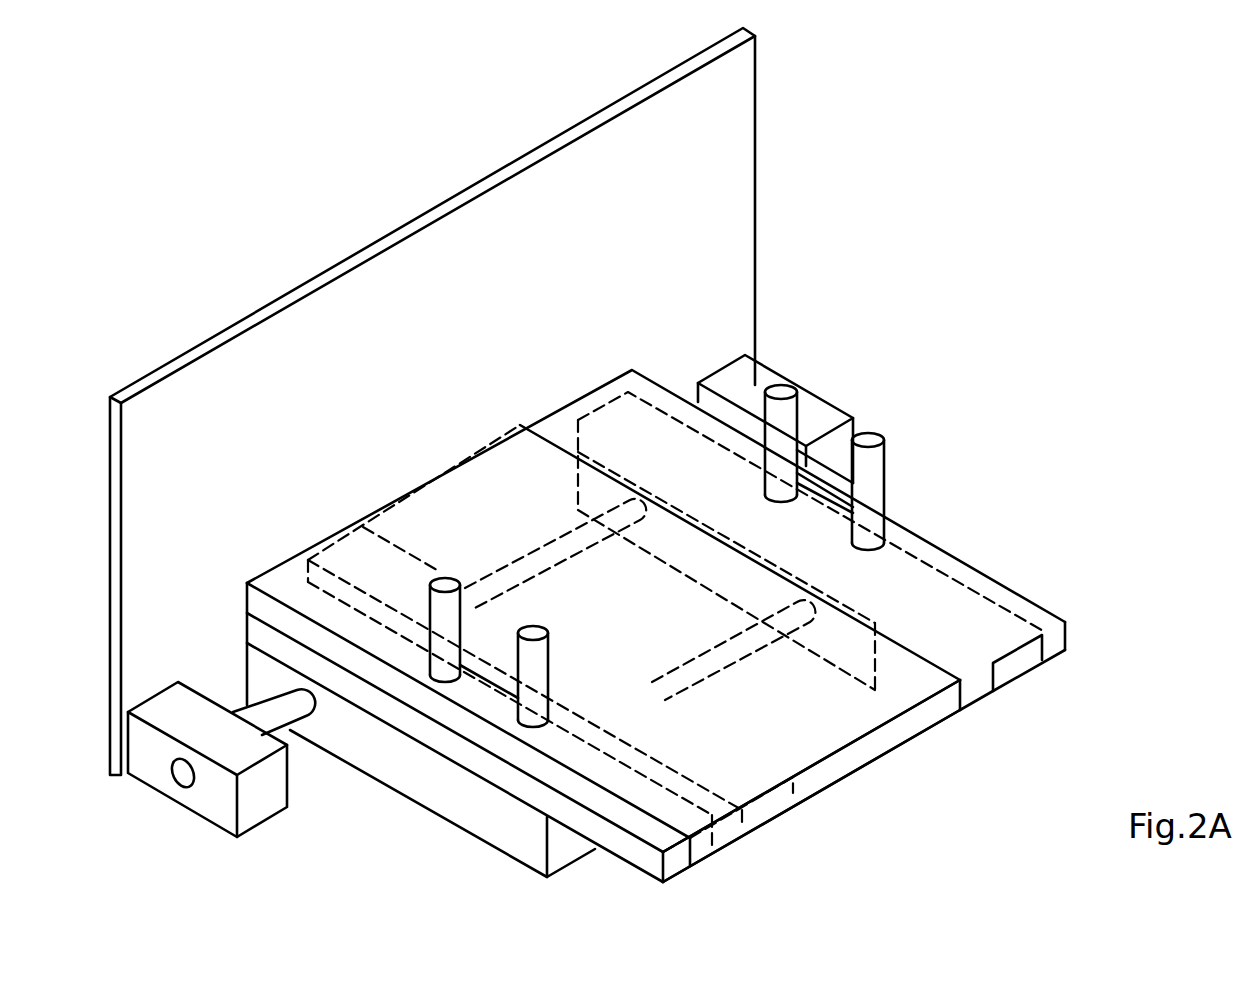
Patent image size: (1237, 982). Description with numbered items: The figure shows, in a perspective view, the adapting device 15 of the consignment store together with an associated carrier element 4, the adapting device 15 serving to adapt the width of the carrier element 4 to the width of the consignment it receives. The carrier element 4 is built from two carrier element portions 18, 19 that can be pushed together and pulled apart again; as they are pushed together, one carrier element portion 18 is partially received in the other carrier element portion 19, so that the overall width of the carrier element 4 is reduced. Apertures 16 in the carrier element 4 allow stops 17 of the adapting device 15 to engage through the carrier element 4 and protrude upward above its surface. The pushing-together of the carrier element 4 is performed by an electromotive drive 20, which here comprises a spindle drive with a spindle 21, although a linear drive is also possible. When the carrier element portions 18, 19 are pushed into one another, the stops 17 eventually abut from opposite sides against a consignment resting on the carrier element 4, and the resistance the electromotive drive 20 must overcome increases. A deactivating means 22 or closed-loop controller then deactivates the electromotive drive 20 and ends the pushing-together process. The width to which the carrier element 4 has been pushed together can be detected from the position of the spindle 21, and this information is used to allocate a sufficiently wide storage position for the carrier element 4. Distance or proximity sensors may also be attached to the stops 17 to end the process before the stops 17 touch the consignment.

The carrier element 4 is at (930, 745).
The adapting device 15 is at (877, 192).
The apertures 16 is at (815, 507).
The stops 17 is at (783, 392).
The carrier element portion 18 is at (1055, 648).
The carrier element portion 19 is at (848, 782).
The electromotive drive 20 is at (175, 705).
The spindle 21 is at (540, 567).
The deactivating means 22 is at (740, 375).